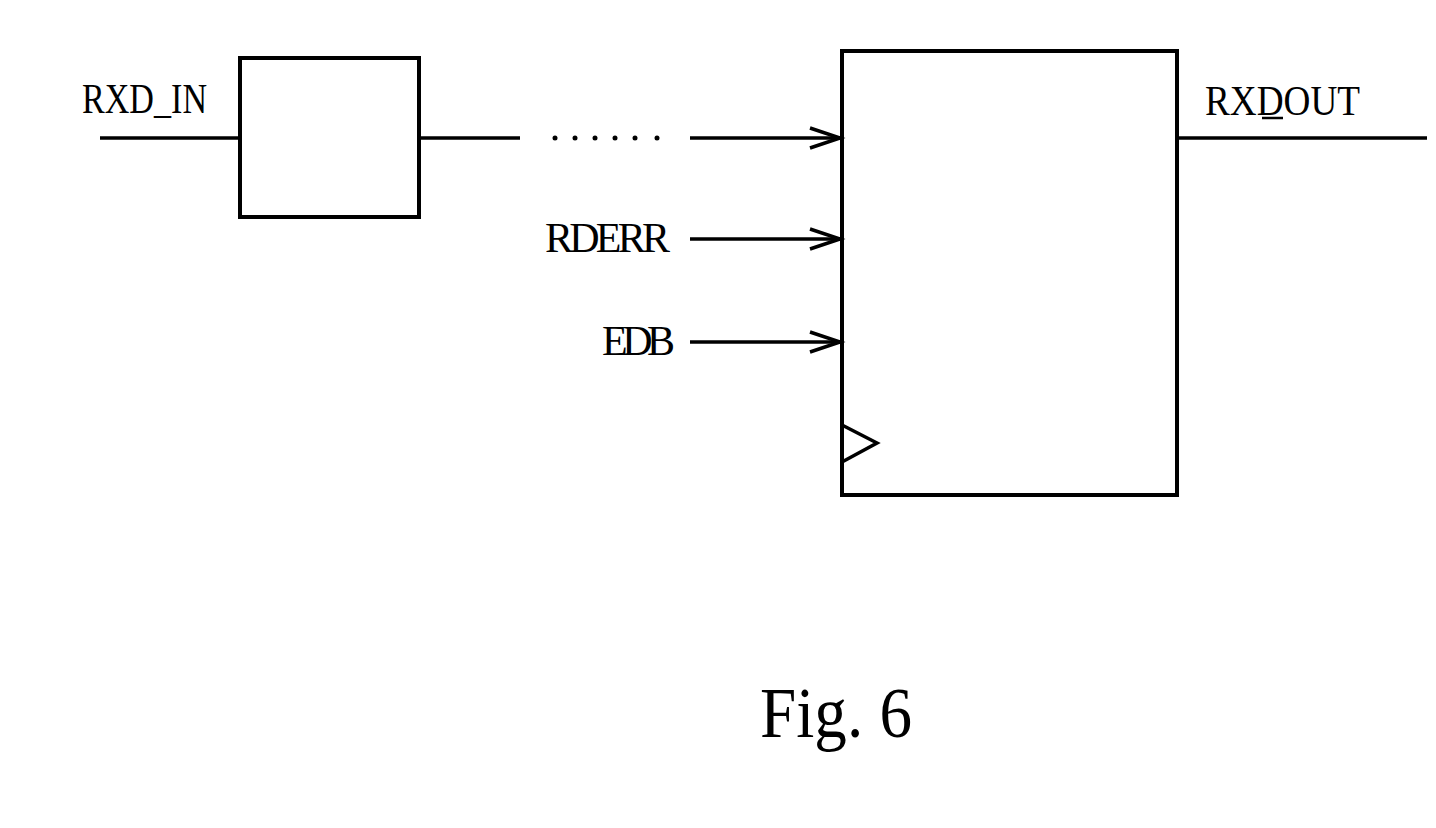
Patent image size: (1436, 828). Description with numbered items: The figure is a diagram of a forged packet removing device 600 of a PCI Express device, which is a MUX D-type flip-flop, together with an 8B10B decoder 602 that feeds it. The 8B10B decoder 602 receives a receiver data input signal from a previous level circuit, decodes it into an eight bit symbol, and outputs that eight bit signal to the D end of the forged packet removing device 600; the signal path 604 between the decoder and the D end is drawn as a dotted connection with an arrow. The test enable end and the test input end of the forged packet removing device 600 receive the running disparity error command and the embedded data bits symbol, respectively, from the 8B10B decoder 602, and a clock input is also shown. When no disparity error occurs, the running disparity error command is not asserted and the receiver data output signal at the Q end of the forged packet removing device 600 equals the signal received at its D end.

The 8B10B decoder 602 is at (385, 58).
The forged packet removing device 600 is at (1145, 51).
The intermediate signal path (dots and arrow into D input) 604 is at (698, 138).